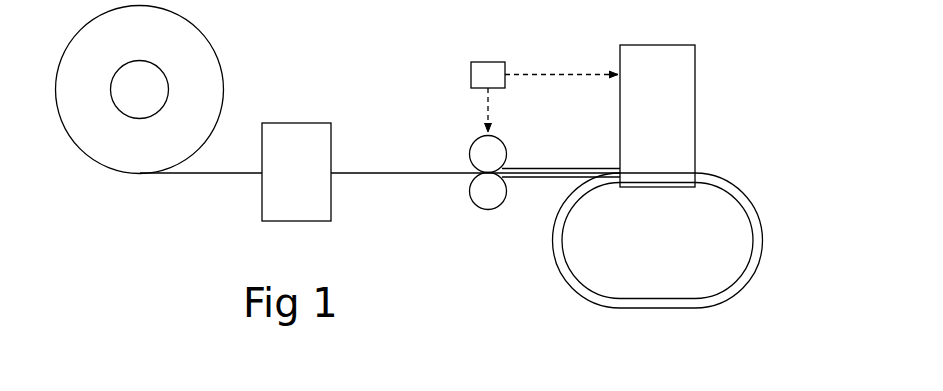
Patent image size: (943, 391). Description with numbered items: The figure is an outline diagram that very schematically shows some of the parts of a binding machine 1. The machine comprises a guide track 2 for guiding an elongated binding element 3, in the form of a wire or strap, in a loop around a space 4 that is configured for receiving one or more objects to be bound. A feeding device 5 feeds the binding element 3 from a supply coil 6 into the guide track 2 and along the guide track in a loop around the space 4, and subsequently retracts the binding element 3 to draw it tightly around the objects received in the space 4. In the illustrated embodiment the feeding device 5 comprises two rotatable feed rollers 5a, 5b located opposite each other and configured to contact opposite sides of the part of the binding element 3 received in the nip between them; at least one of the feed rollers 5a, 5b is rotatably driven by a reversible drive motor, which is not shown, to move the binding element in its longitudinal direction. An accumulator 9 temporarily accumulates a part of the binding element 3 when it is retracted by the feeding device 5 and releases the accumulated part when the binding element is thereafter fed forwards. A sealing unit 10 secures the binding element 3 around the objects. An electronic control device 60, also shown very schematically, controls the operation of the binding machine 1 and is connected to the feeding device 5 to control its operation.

The binding machine 1 is at (160, 230).
The guide track 2 is at (666, 244).
The binding element 3 is at (402, 170).
The space 4 is at (672, 280).
The feeding device 5 is at (513, 175).
The feed roller 5a is at (502, 157).
The feed roller 5b is at (485, 199).
The supply coil 6 is at (206, 51).
The accumulator 9 is at (308, 130).
The sealing unit 10 is at (666, 50).
The electronic control device 60 is at (492, 65).